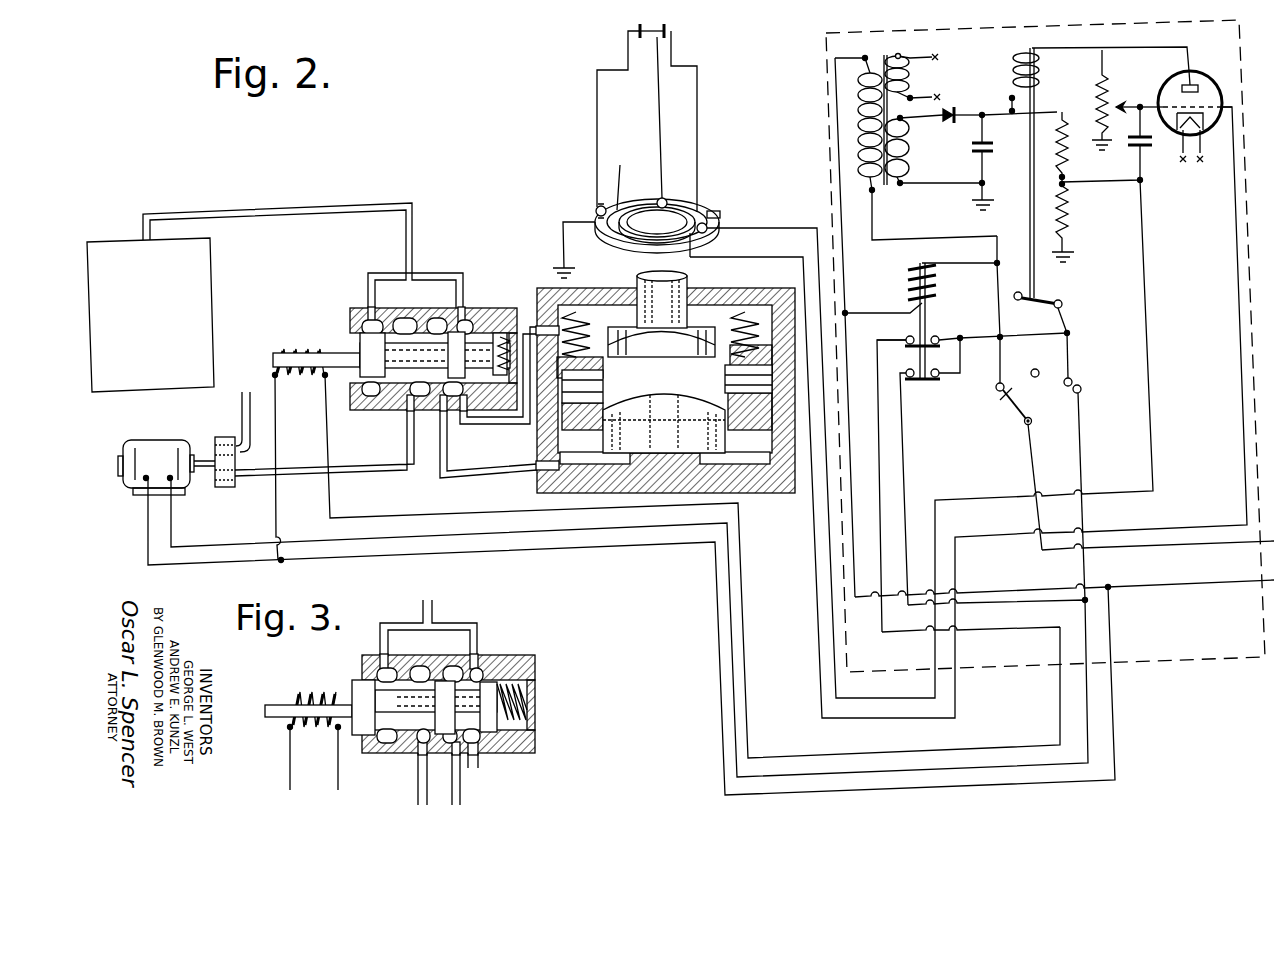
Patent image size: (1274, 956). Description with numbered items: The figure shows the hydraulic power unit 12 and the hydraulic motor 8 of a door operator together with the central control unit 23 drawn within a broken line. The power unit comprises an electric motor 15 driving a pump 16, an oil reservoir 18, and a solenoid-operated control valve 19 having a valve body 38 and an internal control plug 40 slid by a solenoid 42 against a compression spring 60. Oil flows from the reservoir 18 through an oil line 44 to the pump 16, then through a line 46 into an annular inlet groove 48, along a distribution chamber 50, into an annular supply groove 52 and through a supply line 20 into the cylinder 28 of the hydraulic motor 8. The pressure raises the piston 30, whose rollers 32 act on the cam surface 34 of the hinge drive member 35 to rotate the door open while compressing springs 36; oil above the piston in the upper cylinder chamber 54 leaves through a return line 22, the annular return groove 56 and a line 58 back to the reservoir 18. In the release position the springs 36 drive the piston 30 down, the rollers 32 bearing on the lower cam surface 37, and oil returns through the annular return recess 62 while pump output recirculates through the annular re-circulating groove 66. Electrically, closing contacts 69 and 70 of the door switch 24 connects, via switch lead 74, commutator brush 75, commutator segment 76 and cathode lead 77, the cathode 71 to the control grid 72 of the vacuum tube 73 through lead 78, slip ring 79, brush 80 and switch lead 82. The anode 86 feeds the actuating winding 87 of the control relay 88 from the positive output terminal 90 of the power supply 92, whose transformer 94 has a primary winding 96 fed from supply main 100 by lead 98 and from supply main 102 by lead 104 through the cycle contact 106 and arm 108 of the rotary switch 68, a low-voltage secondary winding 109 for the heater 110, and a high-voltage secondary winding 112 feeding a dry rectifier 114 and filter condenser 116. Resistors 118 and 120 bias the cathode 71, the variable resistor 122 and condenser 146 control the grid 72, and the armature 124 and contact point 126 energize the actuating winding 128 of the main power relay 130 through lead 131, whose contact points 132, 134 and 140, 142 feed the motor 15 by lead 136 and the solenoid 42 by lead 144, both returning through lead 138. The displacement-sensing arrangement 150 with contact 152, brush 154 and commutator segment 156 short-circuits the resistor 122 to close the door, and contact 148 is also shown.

In FIG. 2, the hydraulic power unit 12 is at (253, 177).
In FIG. 2, the oil reservoir 18 is at (112, 250).
In FIG. 2, the return line 58 is at (400, 206).
In FIG. 3, the return line 58 is at (432, 605).
In FIG. 2, the oil line 44 is at (242, 415).
In FIG. 2, the electric motor 15 is at (150, 445).
In FIG. 2, the pump 16 is at (236, 458).
In FIG. 2, the line 46 is at (240, 478).
In FIG. 3, the line 46 is at (418, 798).
In FIG. 2, the solenoid 42 is at (268, 346).
In FIG. 3, the solenoid 42 is at (284, 692).
In FIG. 2, the internal control plug 40 is at (362, 352).
In FIG. 3, the internal control plug 40 is at (352, 690).
In FIG. 2, the solenoid-operated control valve 19 is at (403, 350).
In FIG. 3, the solenoid-operated control valve 19 is at (466, 703).
In FIG. 2, the valve body 38 is at (366, 308).
In FIG. 3, the valve body 38 is at (512, 655).
In FIG. 2, the distribution chamber 50 is at (422, 318).
In FIG. 3, the distribution chamber 50 is at (408, 666).
In FIG. 2, the annular return recess 62 is at (470, 318).
In FIG. 3, the annular return recess 62 is at (470, 666).
In FIG. 2, the annular re-circulating groove 66 is at (366, 398).
In FIG. 3, the annular re-circulating groove 66 is at (382, 745).
In FIG. 2, the annular inlet groove 48 is at (405, 398).
In FIG. 3, the annular inlet groove 48 is at (416, 748).
In FIG. 2, the annular supply groove 52 is at (440, 400).
In FIG. 3, the annular supply groove 52 is at (450, 750).
In FIG. 2, the annular return groove 56 is at (455, 400).
In FIG. 3, the annular return groove 56 is at (470, 760).
In FIG. 2, the compression spring 60 is at (506, 335).
In FIG. 3, the compression spring 60 is at (528, 715).
In FIG. 2, the supply line 20 is at (500, 466).
In FIG. 3, the supply line 20 is at (462, 797).
In FIG. 2, the return line 22 is at (496, 420).
In FIG. 3, the return line 22 is at (480, 766).
In FIG. 2, the hydraulic motor 8 is at (647, 378).
In FIG. 2, the piston 30 is at (647, 391).
In FIG. 2, the cylinder 28 is at (560, 482).
In FIG. 2, the springs 36 is at (592, 326).
In FIG. 2, the rollers 32 is at (600, 406).
In FIG. 2, the lower cam surface 37 is at (648, 392).
In FIG. 2, the cam surface 34 is at (640, 348).
In FIG. 2, the hinge drive member 35 is at (637, 283).
In FIG. 2, the upper cylinder chamber 54 is at (560, 320).
In FIG. 2, the displacement-sensing arrangement 150 is at (725, 182).
In FIG. 2, the brush 154 is at (597, 206).
In FIG. 2, the brush 80 is at (658, 198).
In FIG. 2, the commutator brush 75 is at (708, 226).
In FIG. 2, the commutator segment 76 is at (708, 238).
In FIG. 2, the slip ring 79 is at (618, 243).
In FIG. 2, the commutator segment 156 is at (620, 165).
In FIG. 2, the switch lead 82 is at (660, 134).
In FIG. 2, the switch lead 74 is at (698, 115).
In FIG. 2, the door switch 24 is at (623, 40).
In FIG. 2, the contact 152 is at (628, 37).
In FIG. 2, the contact 69 is at (673, 34).
In FIG. 2, the central contact 70 is at (651, 36).
In FIG. 2, the cathode lead 77 is at (818, 222).
In FIG. 2, the lead 78 is at (780, 257).
In FIG. 2, the lead 136 is at (173, 524).
In FIG. 2, the lead 138 is at (146, 538).
In FIG. 2, the lead 144 is at (332, 498).
In FIG. 3, the lead 144 is at (338, 770).
In FIG. 2, the central control unit 23 is at (818, 33).
In FIG. 2, the rectifier-filter power supply 92 is at (908, 123).
In FIG. 2, the primary winding 96 is at (866, 182).
In FIG. 2, the transformer 94 is at (886, 52).
In FIG. 2, the low-voltage secondary winding 109 is at (909, 71).
In FIG. 2, the high-voltage secondary winding 112 is at (910, 138).
In FIG. 2, the lead 98 is at (858, 238).
In FIG. 2, the lead 104 is at (943, 238).
In FIG. 2, the dry rectifier 114 is at (950, 108).
In FIG. 2, the positive output terminal 90 is at (984, 117).
In FIG. 2, the filter condenser 116 is at (970, 150).
In FIG. 2, the control relay 88 is at (1081, 166).
In FIG. 2, the actuating winding 87 is at (1038, 84).
In FIG. 2, the variable resistor 122 is at (1096, 84).
In FIG. 2, the fixed resistor 118 is at (1066, 152).
In FIG. 2, the fixed resistor 120 is at (1067, 212).
In FIG. 2, the condenser 146 is at (1143, 148).
In FIG. 2, the vacuum tube 73 is at (1183, 110).
In FIG. 2, the anode 86 is at (1186, 82).
In FIG. 2, the control grid 72 is at (1163, 103).
In FIG. 2, the cathode 71 is at (1205, 129).
In FIG. 2, the heater 110 is at (1196, 161).
In FIG. 2, the main power relay 130 is at (955, 420).
In FIG. 2, the actuating winding 128 is at (930, 290).
In FIG. 2, the contact point 142 is at (905, 337).
In FIG. 2, the contact point 140 is at (937, 336).
In FIG. 2, the contact point 134 is at (905, 370).
In FIG. 2, the contact point 132 is at (938, 370).
In FIG. 2, the armature 124 is at (1042, 310).
In FIG. 2, the contact point 126 is at (1013, 298).
In FIG. 2, the three-position rotary switch 68 is at (1035, 431).
In FIG. 2, the cycle contact 106 is at (998, 384).
In FIG. 2, the arm 108 is at (1020, 416).
In FIG. 2, the lead 131 is at (1002, 366).
In FIG. 2, the continuous contact 148 is at (1072, 380).
In FIG. 2, the alternating current supply main 100 is at (1194, 584).
In FIG. 2, the supply main 102 is at (1198, 551).